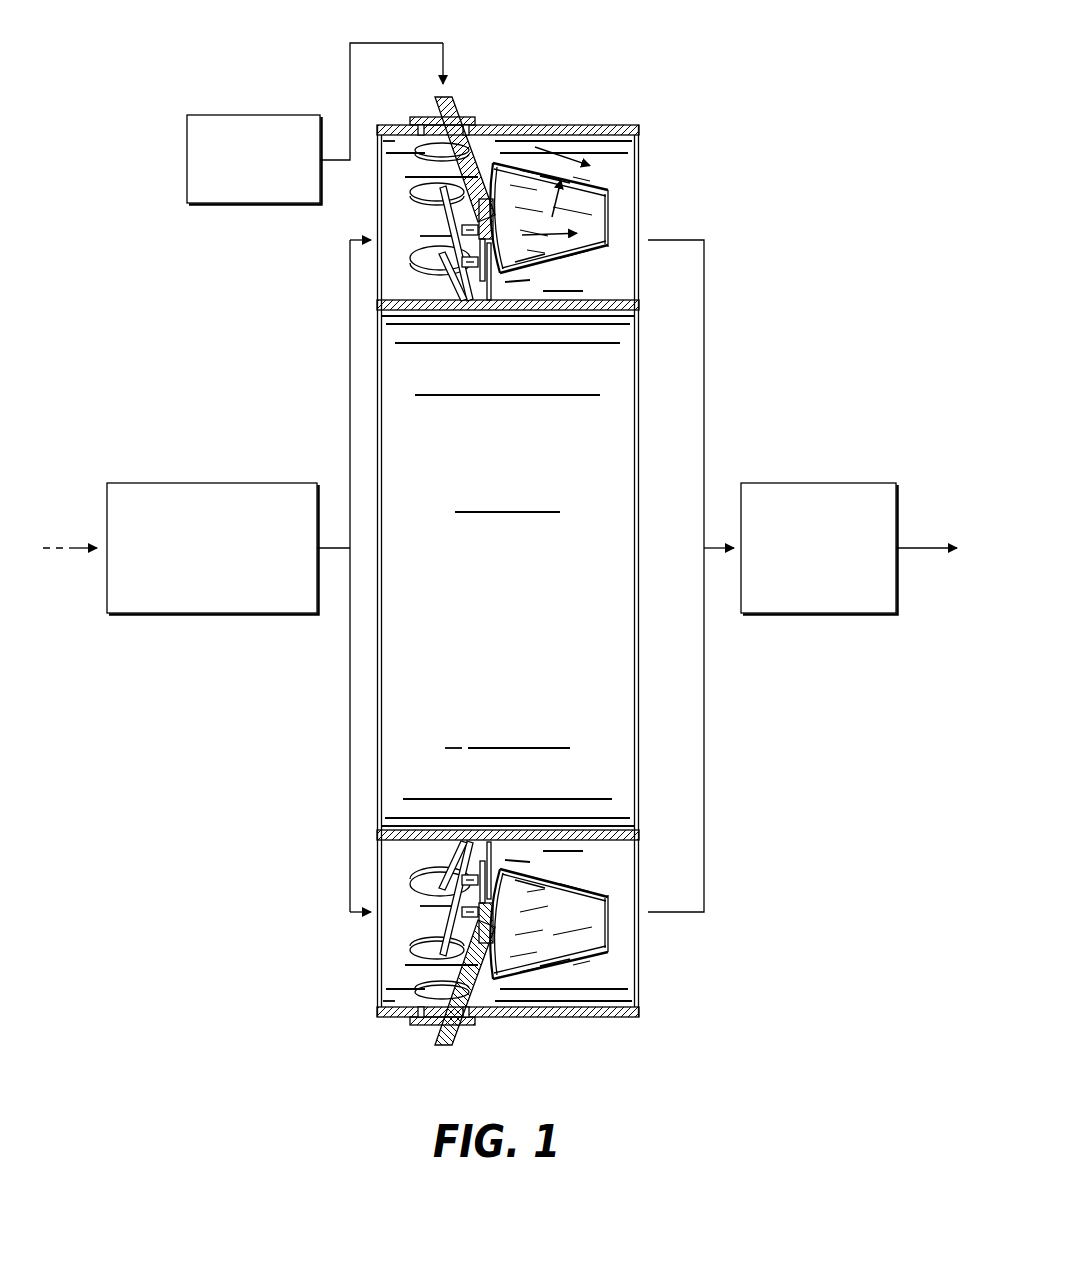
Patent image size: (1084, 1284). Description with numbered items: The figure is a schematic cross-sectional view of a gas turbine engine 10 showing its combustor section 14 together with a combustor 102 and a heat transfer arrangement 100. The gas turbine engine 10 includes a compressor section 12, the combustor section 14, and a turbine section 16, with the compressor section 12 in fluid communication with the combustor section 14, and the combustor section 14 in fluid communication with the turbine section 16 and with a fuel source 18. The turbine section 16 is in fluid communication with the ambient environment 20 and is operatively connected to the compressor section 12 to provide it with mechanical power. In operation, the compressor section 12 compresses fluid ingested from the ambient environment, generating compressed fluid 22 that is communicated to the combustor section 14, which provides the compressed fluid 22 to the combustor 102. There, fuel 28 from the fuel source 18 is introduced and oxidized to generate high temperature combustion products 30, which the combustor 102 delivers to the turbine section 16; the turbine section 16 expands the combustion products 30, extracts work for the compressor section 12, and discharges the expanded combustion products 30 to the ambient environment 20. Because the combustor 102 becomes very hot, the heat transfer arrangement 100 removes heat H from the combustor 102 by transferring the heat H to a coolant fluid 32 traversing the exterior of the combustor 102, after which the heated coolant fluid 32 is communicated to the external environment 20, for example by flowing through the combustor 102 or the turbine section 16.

The gas turbine engine 10 is at (283, 1063).
The compressor section 12 is at (203, 613).
The combustor section 14 is at (563, 1017).
The turbine section 16 is at (825, 613).
The fuel source 18 is at (252, 203).
The ambient environment 20 is at (904, 352).
The compressed fluid 22 is at (345, 328).
The fuel 28 is at (410, 43).
The high temperature combustion products 30 is at (545, 236).
The coolant fluid 32 is at (568, 150).
The heat transfer arrangement 100 is at (515, 170).
The combustor 102 is at (590, 257).
The heat H is at (586, 204).